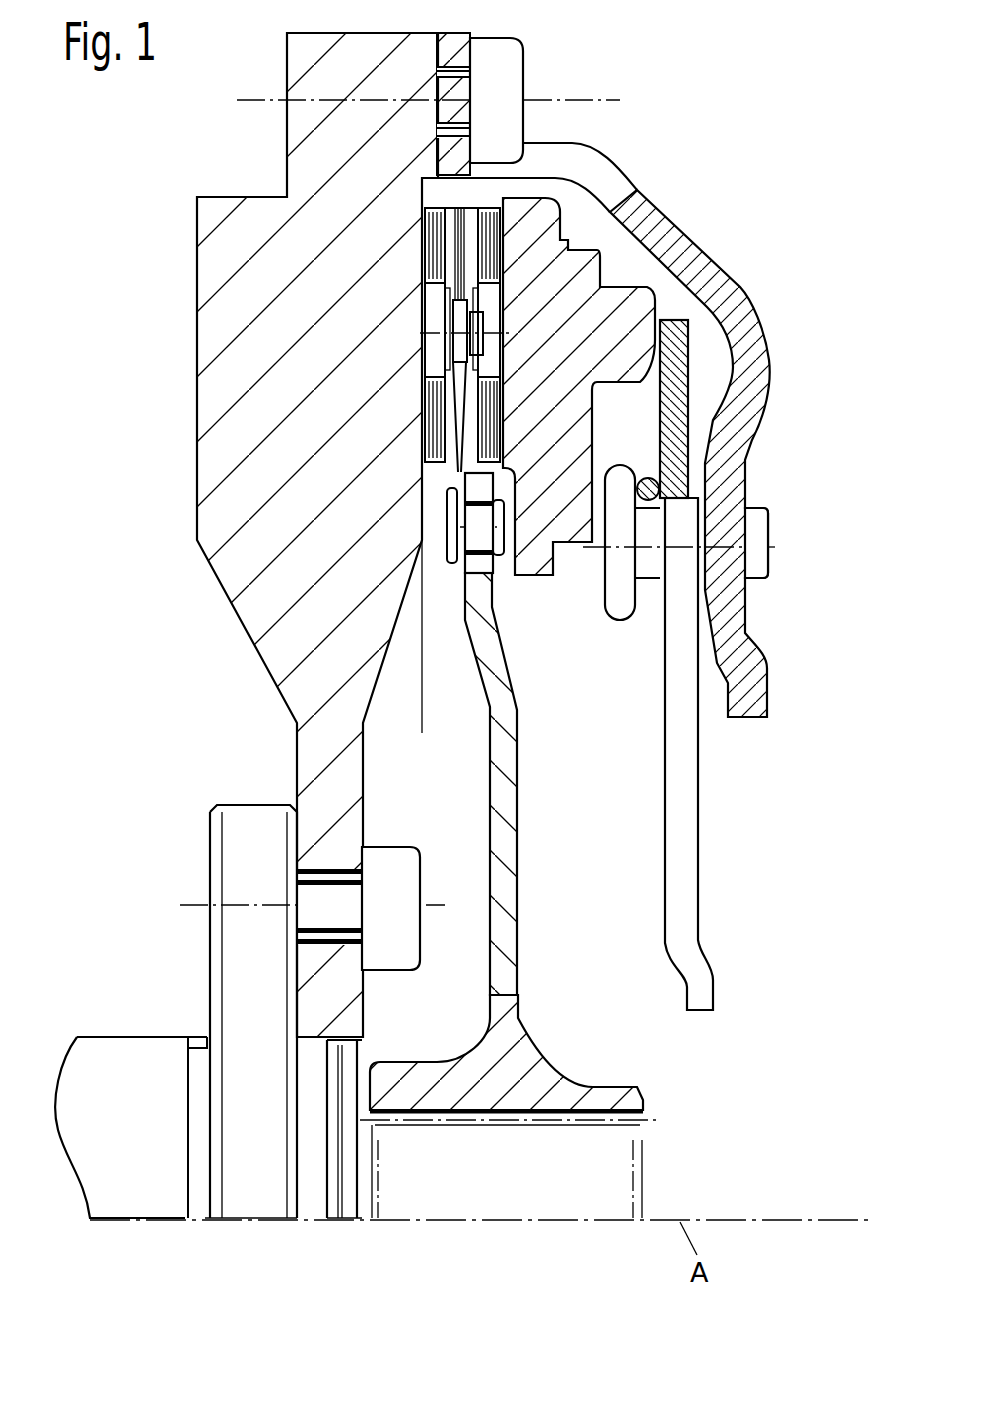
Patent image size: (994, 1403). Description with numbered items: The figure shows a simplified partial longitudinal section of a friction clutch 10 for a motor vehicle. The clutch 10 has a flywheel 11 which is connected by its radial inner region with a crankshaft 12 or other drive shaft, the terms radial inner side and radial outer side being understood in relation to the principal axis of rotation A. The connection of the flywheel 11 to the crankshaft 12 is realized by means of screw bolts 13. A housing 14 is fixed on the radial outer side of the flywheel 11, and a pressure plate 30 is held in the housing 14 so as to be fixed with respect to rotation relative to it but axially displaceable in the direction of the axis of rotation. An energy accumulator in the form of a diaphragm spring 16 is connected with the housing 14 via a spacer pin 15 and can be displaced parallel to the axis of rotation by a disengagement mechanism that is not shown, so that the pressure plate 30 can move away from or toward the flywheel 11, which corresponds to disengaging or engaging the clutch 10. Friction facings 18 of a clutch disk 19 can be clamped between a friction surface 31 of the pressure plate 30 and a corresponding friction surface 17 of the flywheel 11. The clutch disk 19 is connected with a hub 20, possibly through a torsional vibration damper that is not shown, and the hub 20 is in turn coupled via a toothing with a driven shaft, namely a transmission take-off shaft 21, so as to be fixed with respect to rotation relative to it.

The friction clutch 10 is at (134, 142).
The flywheel 11 is at (210, 331).
The crankshaft 12 is at (123, 1057).
The screw bolts 13 is at (385, 857).
The housing 14 is at (747, 297).
The spacer pin 15 is at (753, 530).
The diaphragm spring 16 is at (680, 802).
The friction surface 17 is at (423, 315).
The friction facings 18 is at (435, 400).
The clutch disk 19 is at (550, 664).
The hub 20 is at (513, 1043).
The transmission take-off shaft 21 is at (455, 1197).
The pressure plate 30 is at (640, 295).
The friction surface 31 is at (593, 250).